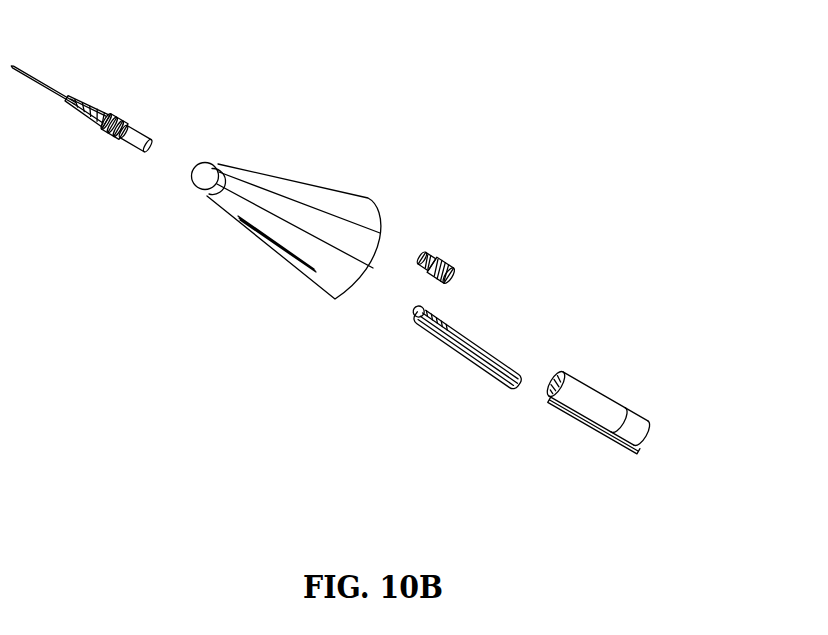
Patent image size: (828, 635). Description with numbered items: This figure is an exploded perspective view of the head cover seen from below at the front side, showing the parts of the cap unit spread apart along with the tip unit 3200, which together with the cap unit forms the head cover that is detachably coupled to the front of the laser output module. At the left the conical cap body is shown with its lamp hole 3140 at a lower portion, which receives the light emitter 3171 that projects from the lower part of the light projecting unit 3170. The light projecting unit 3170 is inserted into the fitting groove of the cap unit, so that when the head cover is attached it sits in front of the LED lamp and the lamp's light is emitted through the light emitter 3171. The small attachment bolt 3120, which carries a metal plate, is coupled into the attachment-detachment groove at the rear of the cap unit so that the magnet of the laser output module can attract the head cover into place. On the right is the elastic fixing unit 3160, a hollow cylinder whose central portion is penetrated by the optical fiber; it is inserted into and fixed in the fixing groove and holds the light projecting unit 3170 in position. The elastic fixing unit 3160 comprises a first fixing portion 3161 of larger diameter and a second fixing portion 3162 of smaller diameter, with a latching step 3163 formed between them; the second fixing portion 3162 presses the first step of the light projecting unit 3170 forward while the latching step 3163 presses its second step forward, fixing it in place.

The tip unit 3200 is at (130, 91).
The lamp hole 3140 is at (272, 252).
The attachment bolt 3120 is at (433, 250).
The light projecting unit 3170 is at (389, 402).
The light emitter 3171 is at (452, 352).
The elastic fixing unit 3160 is at (579, 369).
The first fixing portion 3161 is at (637, 400).
The second fixing portion 3162 is at (591, 378).
The latching step 3163 is at (593, 430).